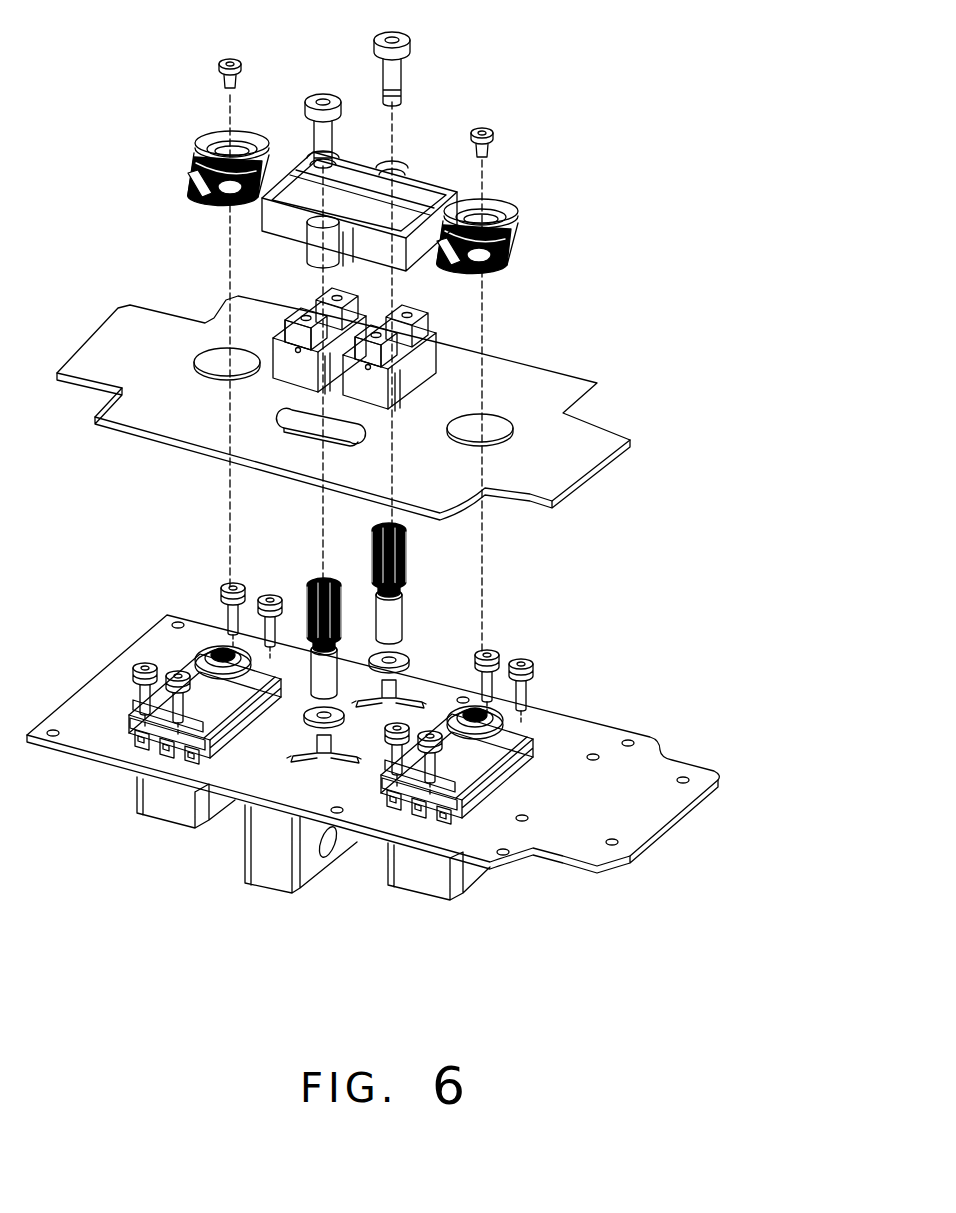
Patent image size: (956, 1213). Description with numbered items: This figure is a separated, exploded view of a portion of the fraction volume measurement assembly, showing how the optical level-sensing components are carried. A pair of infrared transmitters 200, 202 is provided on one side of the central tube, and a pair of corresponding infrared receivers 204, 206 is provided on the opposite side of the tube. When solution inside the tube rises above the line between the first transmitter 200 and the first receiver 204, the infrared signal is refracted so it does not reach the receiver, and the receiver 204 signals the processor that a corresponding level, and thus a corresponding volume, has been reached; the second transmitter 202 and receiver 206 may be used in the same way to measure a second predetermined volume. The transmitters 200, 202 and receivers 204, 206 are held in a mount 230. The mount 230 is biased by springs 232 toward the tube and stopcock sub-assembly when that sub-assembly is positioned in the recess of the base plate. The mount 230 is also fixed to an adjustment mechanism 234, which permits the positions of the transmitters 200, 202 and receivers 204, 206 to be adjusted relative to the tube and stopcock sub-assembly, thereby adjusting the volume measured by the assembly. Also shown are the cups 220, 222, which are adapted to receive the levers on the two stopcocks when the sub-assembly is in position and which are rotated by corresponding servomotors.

The infrared transmitter 200 is at (346, 294).
The infrared transmitter 202 is at (432, 325).
The infrared receiver 204 is at (284, 338).
The infrared receiver 206 is at (428, 348).
The cup 220 is at (195, 150).
The cup 222 is at (516, 214).
The mount 230 is at (418, 170).
The springs 232 is at (338, 648).
The adjustment mechanism 234 is at (260, 900).